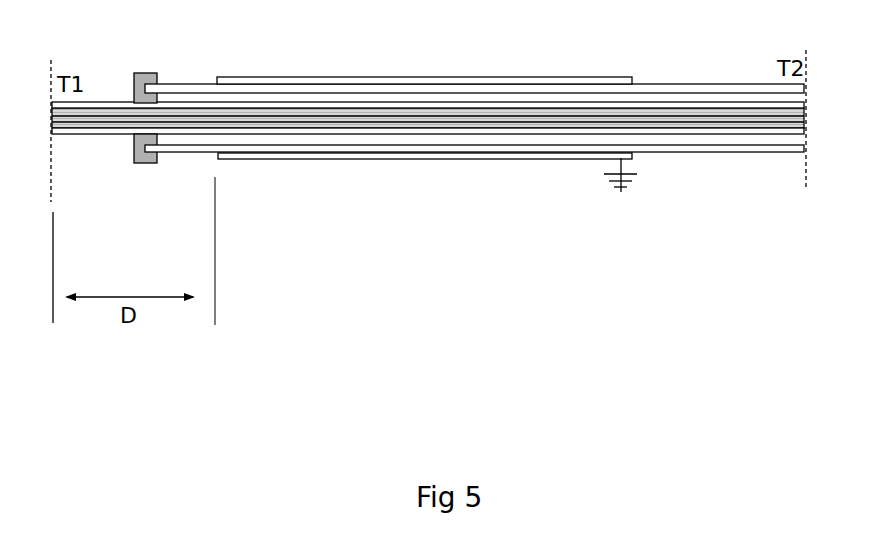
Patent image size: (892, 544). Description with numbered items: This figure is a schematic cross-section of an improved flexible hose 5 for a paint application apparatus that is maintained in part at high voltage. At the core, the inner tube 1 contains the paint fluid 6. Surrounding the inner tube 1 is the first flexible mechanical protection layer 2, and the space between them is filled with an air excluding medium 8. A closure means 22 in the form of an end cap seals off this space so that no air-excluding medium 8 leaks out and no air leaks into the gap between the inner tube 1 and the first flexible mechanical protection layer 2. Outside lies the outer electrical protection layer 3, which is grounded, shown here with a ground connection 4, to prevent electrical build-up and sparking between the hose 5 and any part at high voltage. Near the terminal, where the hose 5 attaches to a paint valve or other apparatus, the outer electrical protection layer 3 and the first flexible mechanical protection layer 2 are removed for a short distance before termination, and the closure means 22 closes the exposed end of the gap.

The inner tube 1 is at (791, 131).
The first flexible mechanical protection layer 2 is at (657, 149).
The outer electrical protection layer 3 is at (425, 189).
The ground connection 4 is at (596, 268).
The improved hose 5 is at (483, 68).
The paint fluid 6 is at (699, 118).
The air excluding medium 8 is at (219, 95).
The closure means 22 is at (260, 225).